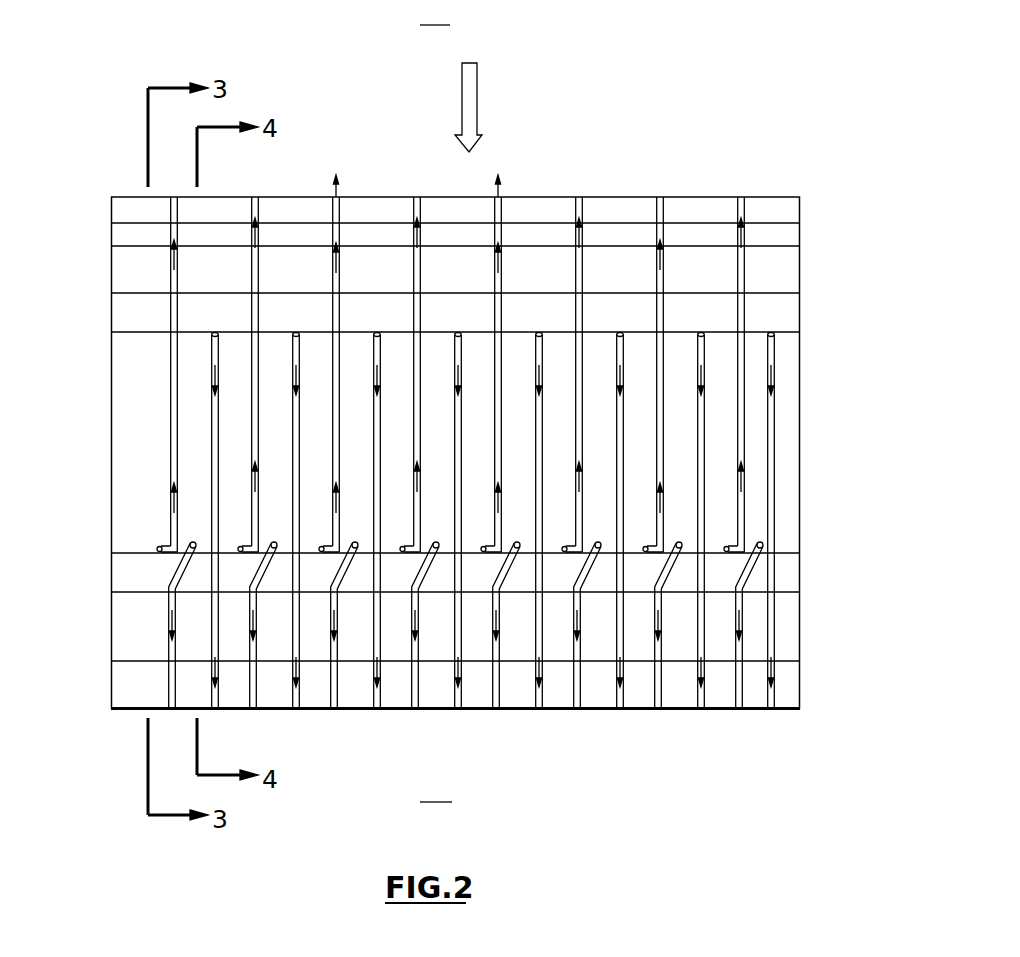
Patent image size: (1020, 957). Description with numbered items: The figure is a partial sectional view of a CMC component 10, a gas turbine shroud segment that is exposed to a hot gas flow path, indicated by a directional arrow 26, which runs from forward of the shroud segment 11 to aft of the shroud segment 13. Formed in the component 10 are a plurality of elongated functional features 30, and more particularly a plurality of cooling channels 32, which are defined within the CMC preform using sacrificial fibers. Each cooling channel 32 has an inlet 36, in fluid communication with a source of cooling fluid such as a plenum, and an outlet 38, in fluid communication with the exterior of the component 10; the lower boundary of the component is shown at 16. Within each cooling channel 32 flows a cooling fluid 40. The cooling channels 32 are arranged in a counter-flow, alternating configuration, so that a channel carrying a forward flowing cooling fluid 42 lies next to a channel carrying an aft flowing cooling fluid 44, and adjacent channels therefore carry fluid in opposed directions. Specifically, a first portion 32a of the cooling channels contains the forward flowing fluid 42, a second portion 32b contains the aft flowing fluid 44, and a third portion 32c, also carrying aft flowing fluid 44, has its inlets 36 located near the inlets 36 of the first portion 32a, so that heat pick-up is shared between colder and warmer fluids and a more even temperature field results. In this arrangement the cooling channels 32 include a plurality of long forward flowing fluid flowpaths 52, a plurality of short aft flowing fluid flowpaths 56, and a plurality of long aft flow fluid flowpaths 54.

The component 10 is at (713, 102).
The forward of the shroud segment 11 is at (438, 13).
The aft of the shroud segment 13 is at (437, 789).
The base wall 16 is at (111, 708).
The directional arrow 26 is at (477, 100).
The elongated functional features 30 is at (775, 430).
The cooling channels 32 is at (170, 232).
The first portion of the plurality of cooling channels 32a is at (171, 450).
The second portion of the plurality of cooling channels 32b is at (212, 468).
The third portion of the plurality of cooling channels 32c is at (168, 608).
The inlet 36 is at (190, 545).
The outlet 38 is at (417, 196).
The cooling fluid 40 is at (171, 257).
The forward flowing cooling fluid 42 is at (583, 232).
The aft flowing cooling fluid 44 is at (775, 377).
The long forward flowing fluid flowpaths 52 is at (745, 315).
The long aft flow fluid flowpath 54 is at (775, 358).
The short aft flowing fluid flowpaths 56 is at (167, 700).